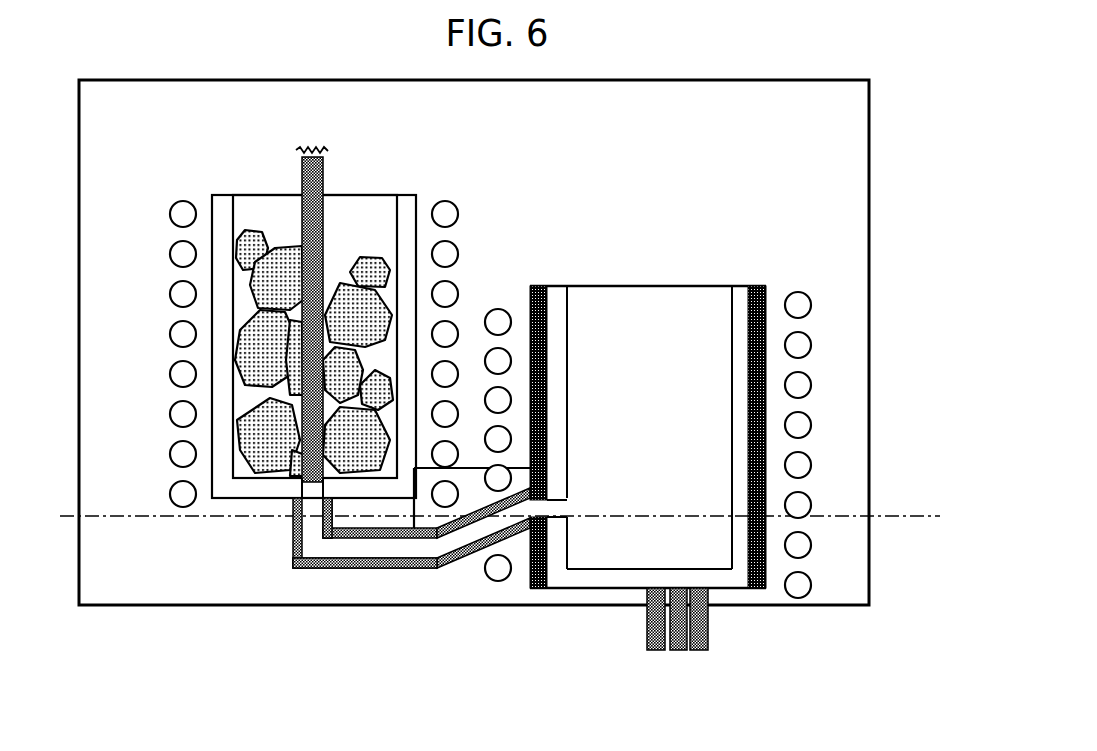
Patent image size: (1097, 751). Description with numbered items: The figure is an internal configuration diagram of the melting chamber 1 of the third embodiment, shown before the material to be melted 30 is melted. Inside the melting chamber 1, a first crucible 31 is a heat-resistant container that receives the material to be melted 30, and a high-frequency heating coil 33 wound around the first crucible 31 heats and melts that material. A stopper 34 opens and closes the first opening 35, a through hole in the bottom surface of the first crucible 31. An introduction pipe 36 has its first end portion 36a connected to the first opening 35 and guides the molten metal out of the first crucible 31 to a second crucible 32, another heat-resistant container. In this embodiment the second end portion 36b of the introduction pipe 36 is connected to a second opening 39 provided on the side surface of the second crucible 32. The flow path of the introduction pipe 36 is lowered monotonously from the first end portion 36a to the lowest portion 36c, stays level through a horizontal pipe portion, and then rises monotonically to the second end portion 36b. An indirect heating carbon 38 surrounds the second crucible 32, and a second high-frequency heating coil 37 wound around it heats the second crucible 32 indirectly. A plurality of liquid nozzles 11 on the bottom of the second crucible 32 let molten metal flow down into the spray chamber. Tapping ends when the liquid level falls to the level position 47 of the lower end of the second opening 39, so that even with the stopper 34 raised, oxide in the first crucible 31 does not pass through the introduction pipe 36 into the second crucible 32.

The melting chamber 1 is at (827, 124).
The liquid nozzles 11 is at (708, 628).
The material to be melted 30 is at (372, 257).
The first crucible 31 is at (223, 193).
The second crucible 32 is at (557, 285).
The high-frequency heating coil 33 is at (182, 199).
The stopper 34 is at (327, 168).
The first opening 35 is at (302, 488).
The introduction pipe 36 is at (292, 550).
The first end portion 36a is at (335, 502).
The second end portion 36b is at (550, 522).
The lowest portion 36c is at (377, 550).
The high-frequency heating coil 37 is at (798, 290).
The indirect heating carbon 38 is at (762, 285).
The second opening 39 is at (553, 494).
The level position 47 is at (130, 516).